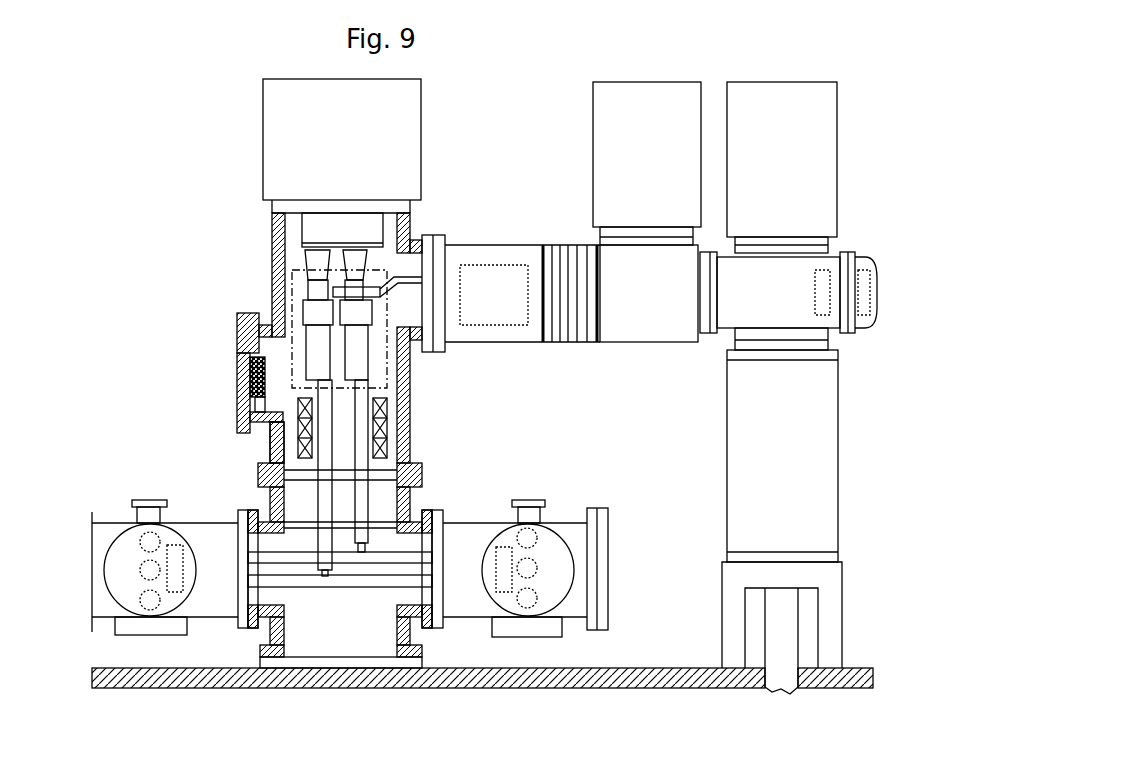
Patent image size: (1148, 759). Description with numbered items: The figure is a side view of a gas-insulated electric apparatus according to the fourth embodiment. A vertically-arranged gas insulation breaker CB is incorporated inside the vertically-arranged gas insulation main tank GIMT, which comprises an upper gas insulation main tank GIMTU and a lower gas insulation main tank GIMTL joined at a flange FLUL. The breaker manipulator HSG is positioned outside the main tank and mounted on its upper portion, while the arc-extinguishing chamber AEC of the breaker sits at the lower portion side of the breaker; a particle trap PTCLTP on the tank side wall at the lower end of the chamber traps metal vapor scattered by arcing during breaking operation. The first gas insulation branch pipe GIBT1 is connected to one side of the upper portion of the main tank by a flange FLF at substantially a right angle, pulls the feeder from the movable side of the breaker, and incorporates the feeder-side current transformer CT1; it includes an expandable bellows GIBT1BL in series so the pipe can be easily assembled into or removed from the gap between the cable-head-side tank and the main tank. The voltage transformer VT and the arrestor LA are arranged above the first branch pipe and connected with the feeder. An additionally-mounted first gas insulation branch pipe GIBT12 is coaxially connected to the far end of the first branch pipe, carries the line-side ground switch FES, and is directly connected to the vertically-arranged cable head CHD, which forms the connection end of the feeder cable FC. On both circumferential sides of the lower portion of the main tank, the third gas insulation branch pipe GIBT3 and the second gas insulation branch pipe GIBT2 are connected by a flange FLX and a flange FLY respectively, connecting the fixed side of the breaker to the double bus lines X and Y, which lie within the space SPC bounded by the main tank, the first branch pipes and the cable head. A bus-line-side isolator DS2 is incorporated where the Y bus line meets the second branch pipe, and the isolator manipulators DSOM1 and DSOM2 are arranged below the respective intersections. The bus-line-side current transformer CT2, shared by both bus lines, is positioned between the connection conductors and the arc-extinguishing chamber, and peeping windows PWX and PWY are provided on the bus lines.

The breaker manipulator HSG is at (265, 143).
The gas insulation breaker CB is at (292, 270).
The arc-extinguishing chamber AEC is at (352, 337).
The particle trap PTCLTP is at (252, 345).
The upper gas insulation main tank GIMTU is at (270, 440).
The lower gas insulation main tank GIMTL is at (270, 515).
The third gas insulation branch pipe GIBT3 is at (104, 522).
The double bus line X is at (118, 550).
The peeping window PWX is at (150, 500).
The flange FLF is at (435, 240).
The current transformer CT1 is at (490, 265).
The bellows GIBT1BL is at (585, 250).
The arrestor LA is at (612, 172).
The voltage transformer VT is at (822, 172).
The gas insulation main tank GIMT is at (415, 392).
The first gas insulation branch pipe GIBT1 is at (602, 345).
The additionally-mounted first gas insulation branch pipe GIBT12 is at (730, 318).
The line-side ground switch FES is at (872, 322).
The bus-line-side current transformer CT2 is at (392, 428).
The flange FLUL is at (415, 470).
The peeping window PWY is at (527, 502).
The double bus line Y is at (557, 535).
The second gas insulation branch pipe GIBT2 is at (572, 545).
The space SPC is at (660, 504).
The cable head CHD is at (830, 505).
The feeder cable FC is at (790, 660).
The flange FLX is at (242, 630).
The flange FLY is at (434, 632).
The manipulator of isolator DSOM1 is at (127, 634).
The bus-line-side isolator DS2 is at (502, 603).
The manipulator of isolator DSOM2 is at (542, 623).